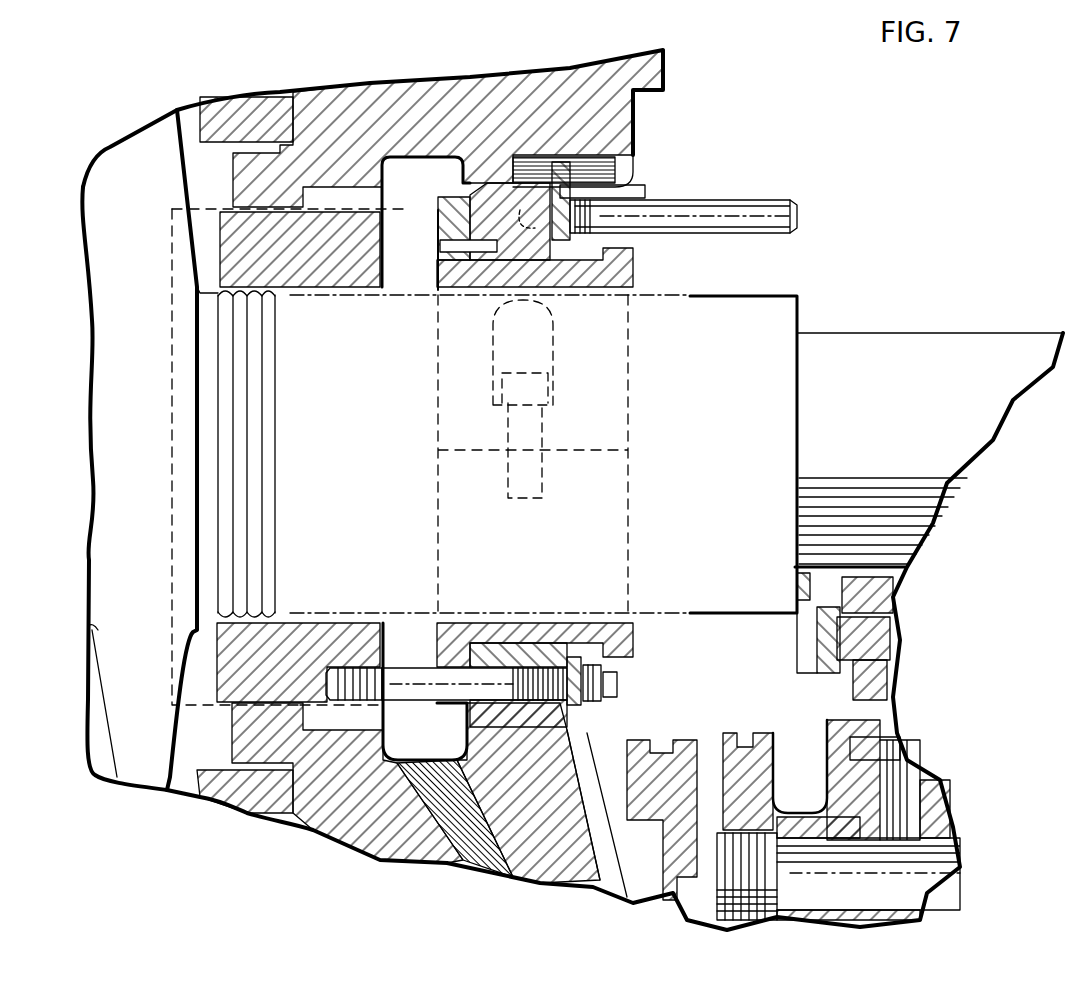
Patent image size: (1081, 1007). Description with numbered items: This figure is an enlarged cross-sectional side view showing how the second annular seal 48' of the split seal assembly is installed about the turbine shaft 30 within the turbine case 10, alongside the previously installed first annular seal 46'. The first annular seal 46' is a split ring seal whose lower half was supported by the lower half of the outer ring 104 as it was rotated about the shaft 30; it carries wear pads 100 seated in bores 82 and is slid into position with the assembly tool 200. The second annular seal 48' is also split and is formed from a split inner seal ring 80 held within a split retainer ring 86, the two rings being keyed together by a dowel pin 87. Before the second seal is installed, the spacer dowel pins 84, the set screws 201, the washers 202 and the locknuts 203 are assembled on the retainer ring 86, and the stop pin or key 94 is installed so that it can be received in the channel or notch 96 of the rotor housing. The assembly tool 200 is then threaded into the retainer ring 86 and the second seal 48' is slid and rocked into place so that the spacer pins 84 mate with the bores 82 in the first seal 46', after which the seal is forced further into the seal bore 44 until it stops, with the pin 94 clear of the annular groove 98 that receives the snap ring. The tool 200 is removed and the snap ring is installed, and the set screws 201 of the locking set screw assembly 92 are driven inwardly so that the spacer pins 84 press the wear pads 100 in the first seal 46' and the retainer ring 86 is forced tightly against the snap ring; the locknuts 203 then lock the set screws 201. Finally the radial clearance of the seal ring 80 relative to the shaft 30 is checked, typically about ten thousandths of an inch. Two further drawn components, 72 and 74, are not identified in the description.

The turbine case 10 is at (663, 65).
The turbine shaft 30 is at (872, 363).
The seal bore 44 is at (175, 453).
The first annular seal 46' is at (254, 272).
The second annular seal 48' is at (454, 454).
The lower body 72 is at (441, 796).
The retaining block 74 is at (585, 752).
The split inner seal ring 80 is at (455, 287).
The bores 82 is at (360, 700).
The dowel pin 84 is at (403, 677).
The split retainer ring 86 is at (497, 187).
The dowel pin 87 is at (448, 240).
The locking set screw assembly 92 is at (542, 668).
The stop pin 94 is at (640, 184).
The channel or notch 96 is at (615, 165).
The annular groove 98 is at (545, 745).
The wear pad 100 is at (337, 667).
The outer ring 104 is at (767, 733).
The assembly tool 200 is at (768, 205).
The set screws 201 is at (618, 683).
The washers 202 is at (573, 668).
The locknuts 203 is at (590, 667).